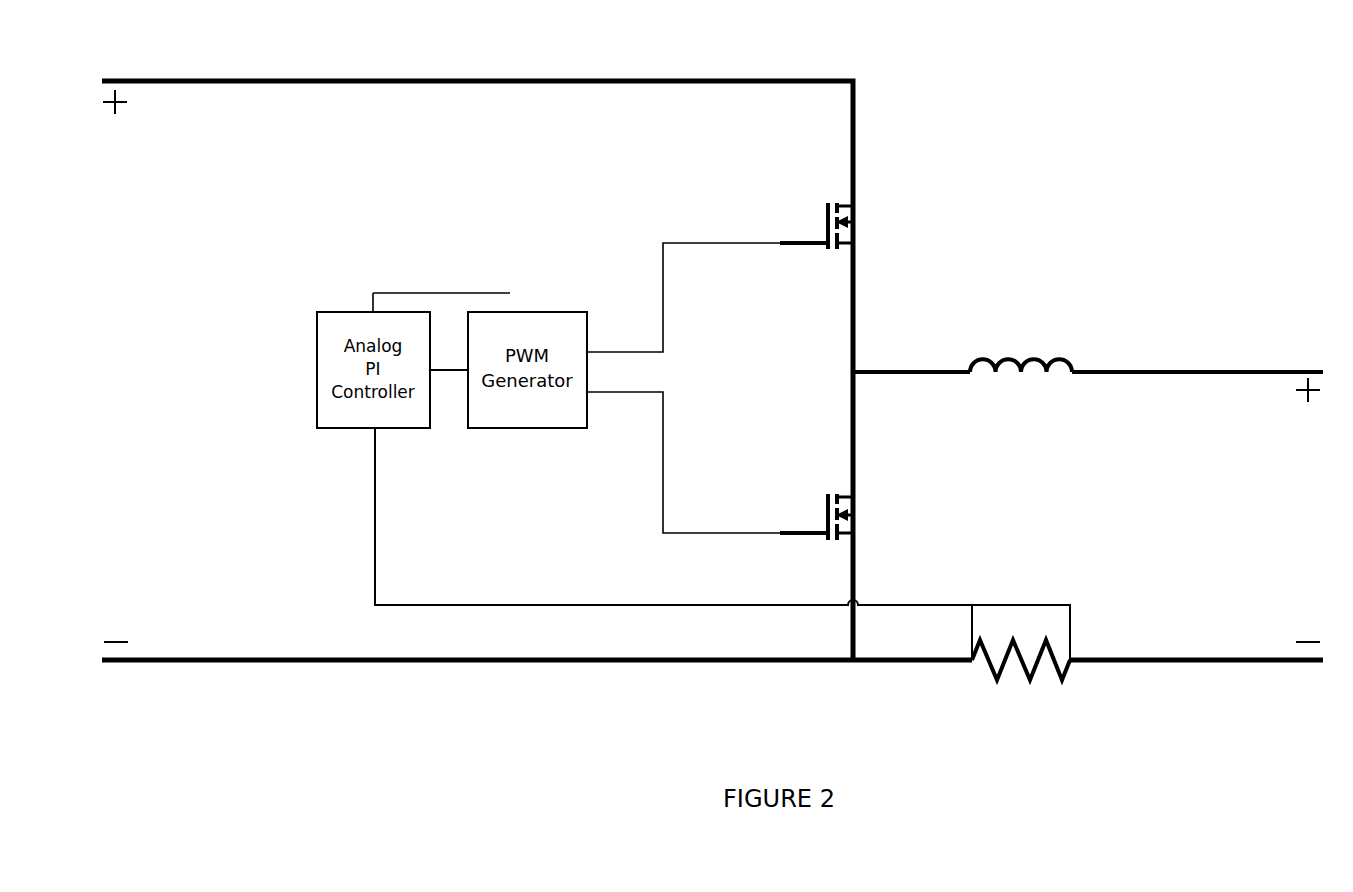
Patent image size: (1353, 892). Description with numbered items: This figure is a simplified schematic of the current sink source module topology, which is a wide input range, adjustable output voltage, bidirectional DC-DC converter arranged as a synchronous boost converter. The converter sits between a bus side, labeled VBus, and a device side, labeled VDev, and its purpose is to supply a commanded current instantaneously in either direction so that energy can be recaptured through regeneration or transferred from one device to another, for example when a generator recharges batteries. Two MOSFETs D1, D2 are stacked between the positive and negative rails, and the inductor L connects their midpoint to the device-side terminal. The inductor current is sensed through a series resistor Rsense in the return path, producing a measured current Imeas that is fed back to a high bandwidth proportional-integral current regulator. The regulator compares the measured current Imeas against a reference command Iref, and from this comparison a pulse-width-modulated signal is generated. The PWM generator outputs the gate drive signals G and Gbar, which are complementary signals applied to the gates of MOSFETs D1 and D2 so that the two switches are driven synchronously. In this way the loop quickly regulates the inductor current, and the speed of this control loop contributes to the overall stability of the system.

The MOSFET D1 is at (862, 226).
The MOSFET D2 is at (862, 517).
The inductor L is at (1021, 350).
The current sense resistor Rsense is at (1021, 679).
The bus voltage VBus is at (108, 361).
The device voltage VDev is at (1307, 509).
The reference current input Iref is at (441, 288).
The measured current feedback Imeas is at (722, 544).
The gate signal G is at (708, 462).
The complementary gate signal G-bar Gbar is at (632, 318).